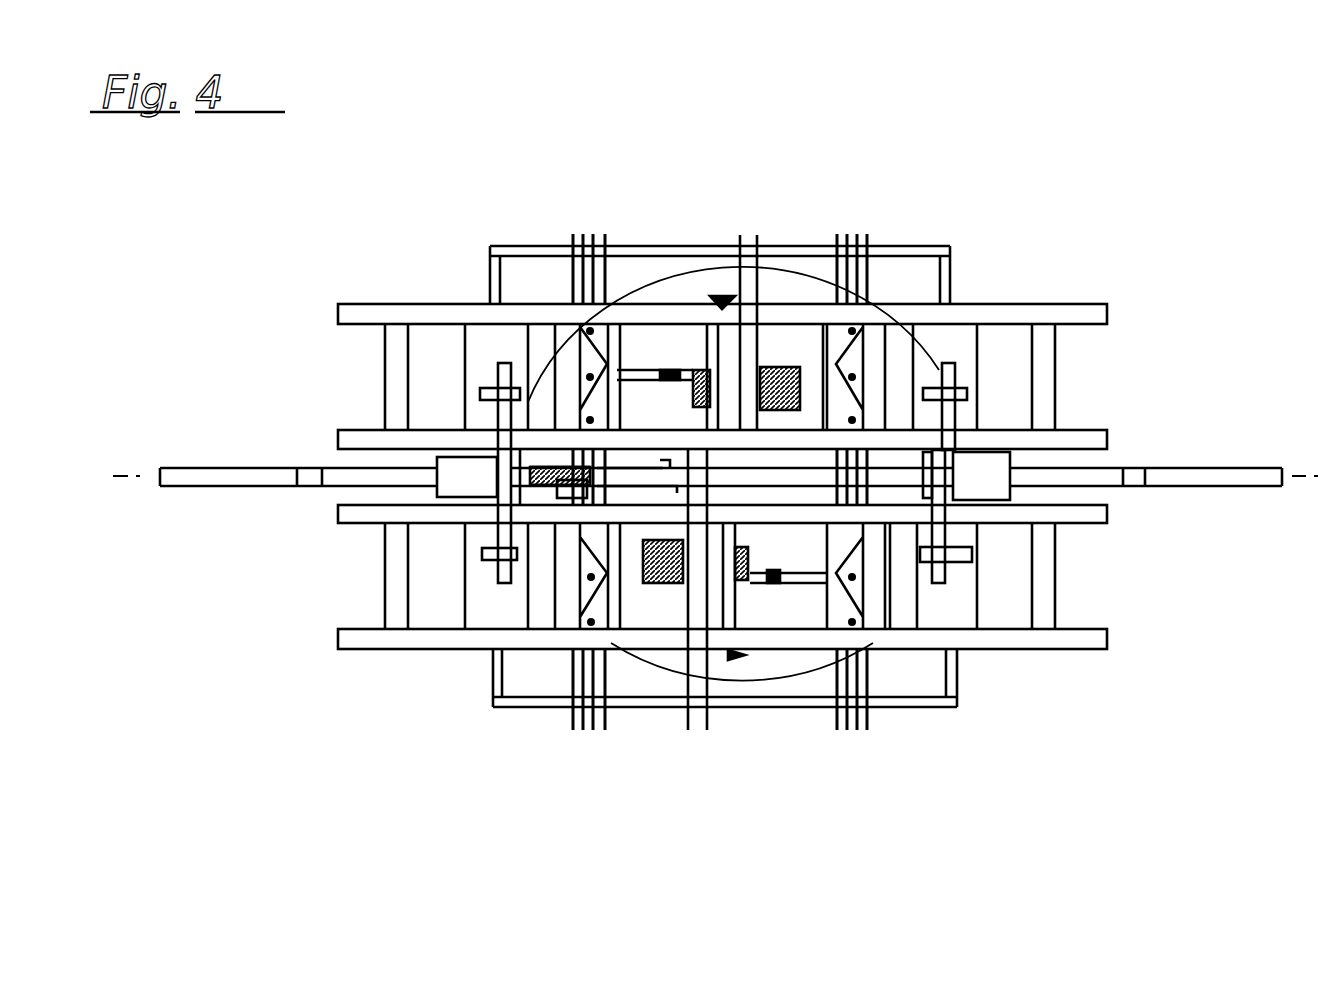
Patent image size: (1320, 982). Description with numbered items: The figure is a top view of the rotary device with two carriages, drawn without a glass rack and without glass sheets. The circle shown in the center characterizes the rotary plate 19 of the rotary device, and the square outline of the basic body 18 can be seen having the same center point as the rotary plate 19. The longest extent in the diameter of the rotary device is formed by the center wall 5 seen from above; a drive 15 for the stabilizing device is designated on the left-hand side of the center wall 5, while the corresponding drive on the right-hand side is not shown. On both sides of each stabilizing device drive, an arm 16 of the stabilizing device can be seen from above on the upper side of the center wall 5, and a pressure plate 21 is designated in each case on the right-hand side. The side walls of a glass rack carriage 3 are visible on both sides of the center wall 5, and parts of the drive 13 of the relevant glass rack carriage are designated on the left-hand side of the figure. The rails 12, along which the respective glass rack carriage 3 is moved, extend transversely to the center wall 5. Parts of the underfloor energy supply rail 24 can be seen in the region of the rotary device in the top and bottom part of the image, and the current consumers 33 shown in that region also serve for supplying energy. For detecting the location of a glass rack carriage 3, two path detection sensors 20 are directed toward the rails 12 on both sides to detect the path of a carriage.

The glass rack carriage 3 is at (400, 645).
The center wall 5 is at (1197, 488).
The rails 12 is at (845, 727).
The drive of the glass rack carriage 13 is at (652, 562).
The drive for the stabilizing device 15 is at (985, 472).
The arm of the stabilizing device 16 is at (947, 397).
The basic body 18 is at (558, 689).
The rotary plate 19 is at (780, 673).
The path detection sensors 20 is at (740, 655).
The pressure plate 21 is at (970, 395).
The underfloor energy supply rail 24 is at (705, 703).
The current consumers 33 is at (723, 303).